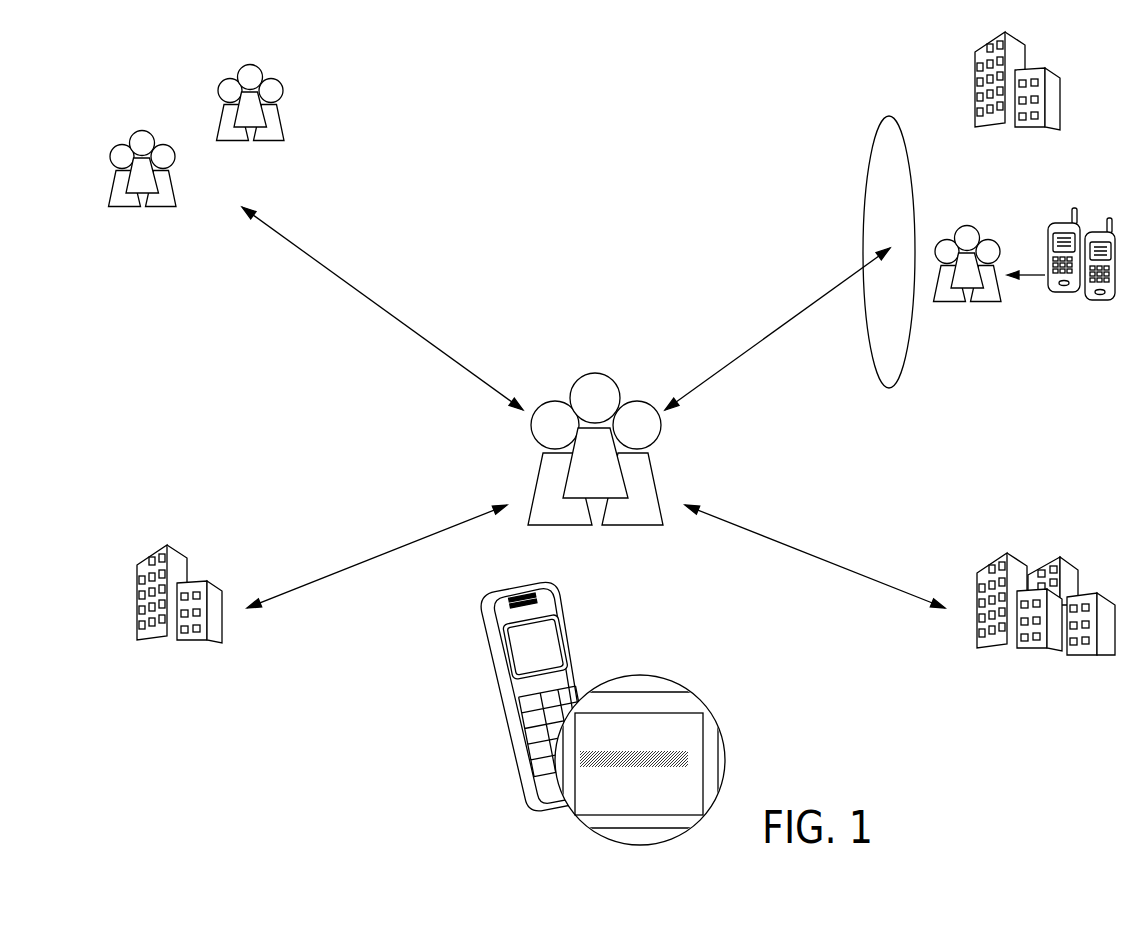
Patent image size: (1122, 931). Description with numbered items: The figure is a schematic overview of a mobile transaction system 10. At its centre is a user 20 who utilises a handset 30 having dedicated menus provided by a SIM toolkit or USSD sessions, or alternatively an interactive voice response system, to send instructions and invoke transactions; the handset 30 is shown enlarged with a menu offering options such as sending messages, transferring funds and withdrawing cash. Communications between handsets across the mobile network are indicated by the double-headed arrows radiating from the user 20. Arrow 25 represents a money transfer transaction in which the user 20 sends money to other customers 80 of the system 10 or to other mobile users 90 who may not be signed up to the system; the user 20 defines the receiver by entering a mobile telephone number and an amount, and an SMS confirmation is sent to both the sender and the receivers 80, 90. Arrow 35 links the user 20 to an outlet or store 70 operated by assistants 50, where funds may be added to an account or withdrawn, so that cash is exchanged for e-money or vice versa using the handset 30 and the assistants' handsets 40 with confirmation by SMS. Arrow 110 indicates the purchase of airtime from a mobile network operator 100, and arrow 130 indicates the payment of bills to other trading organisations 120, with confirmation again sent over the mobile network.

The mobile transaction system 10 is at (744, 98).
The user 20 is at (612, 360).
The arrow 25 is at (377, 296).
The handset 30 is at (598, 650).
The arrow 35 is at (755, 322).
The handset 40 is at (1067, 326).
The assistants 50 is at (954, 329).
The outlet or store 70 is at (1004, 156).
The other customers 80 is at (237, 171).
The other mobile users 90 is at (129, 239).
The mobile network operator 100 is at (153, 674).
The arrow 110 is at (348, 549).
The trading organisations 120 is at (1016, 687).
The arrow 130 is at (809, 553).